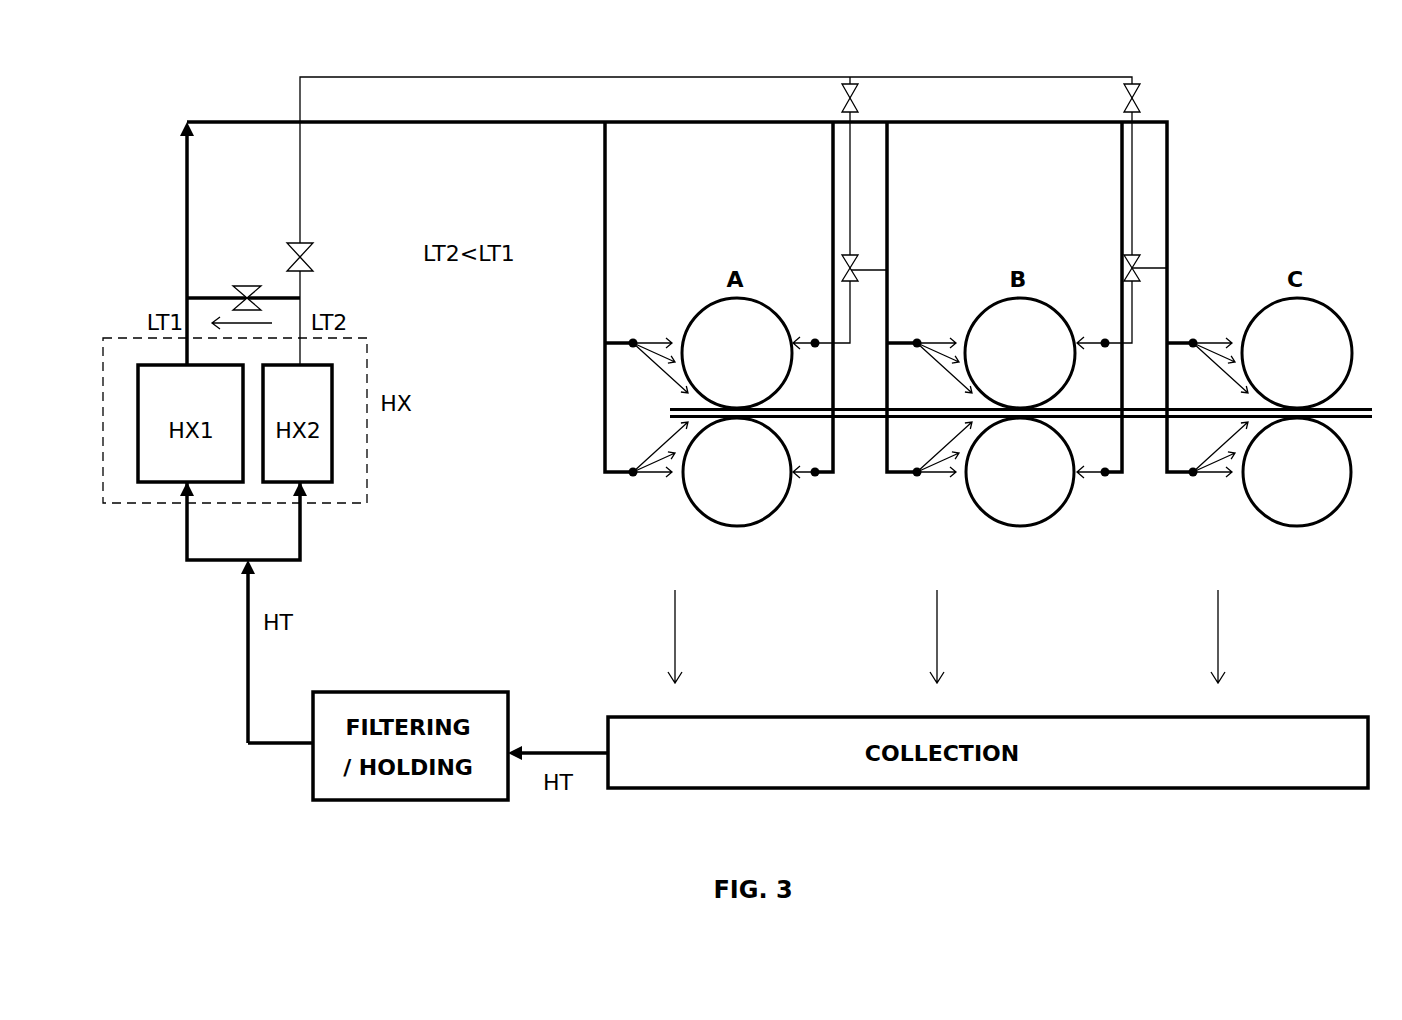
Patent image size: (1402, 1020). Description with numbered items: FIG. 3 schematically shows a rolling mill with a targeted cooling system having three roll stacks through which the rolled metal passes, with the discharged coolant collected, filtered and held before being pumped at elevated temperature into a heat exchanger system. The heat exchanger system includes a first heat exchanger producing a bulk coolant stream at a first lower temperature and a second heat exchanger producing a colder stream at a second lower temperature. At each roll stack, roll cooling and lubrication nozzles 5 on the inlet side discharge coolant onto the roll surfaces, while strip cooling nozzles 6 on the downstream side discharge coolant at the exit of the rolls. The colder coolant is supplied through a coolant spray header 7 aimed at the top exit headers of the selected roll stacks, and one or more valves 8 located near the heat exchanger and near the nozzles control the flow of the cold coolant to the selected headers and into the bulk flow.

The roll cooling and lubrication nozzles 5 is at (633, 338).
The strip cooling nozzles 6 is at (815, 467).
The coolant spray header 7 is at (815, 338).
The valves 8 is at (300, 243).